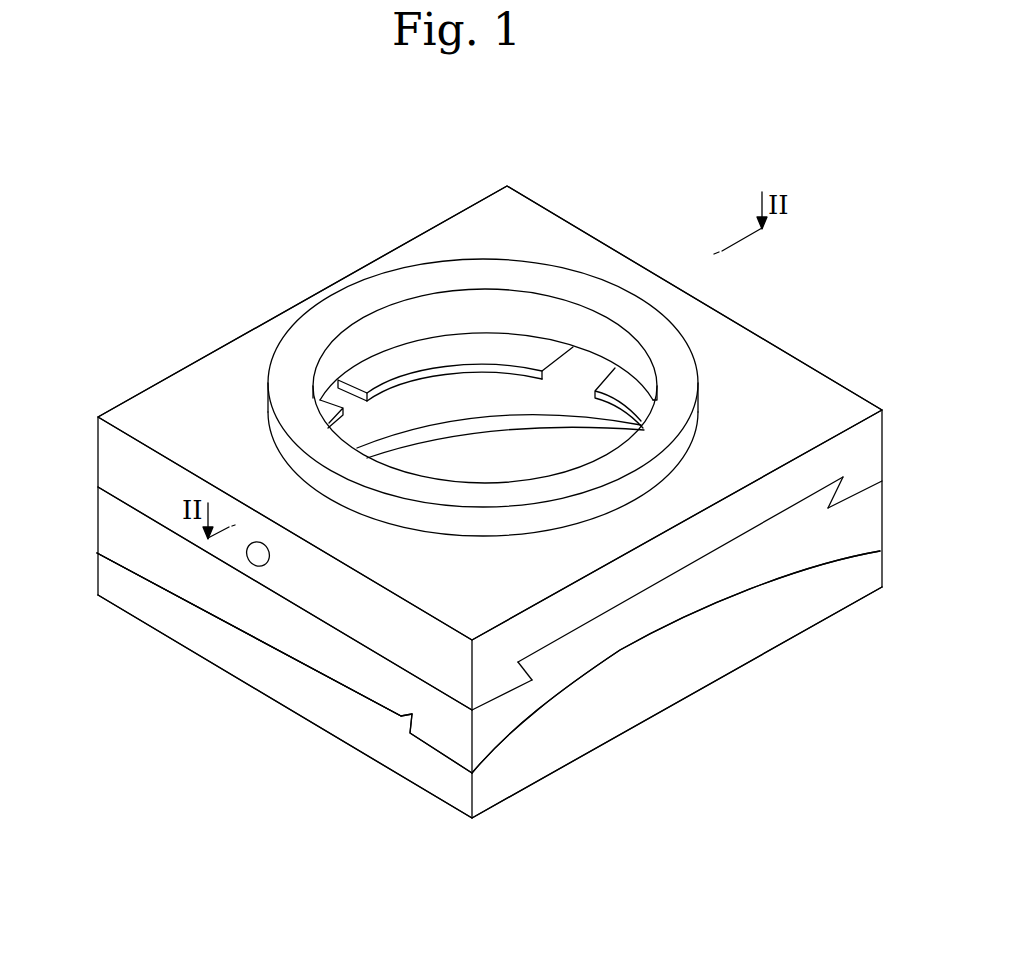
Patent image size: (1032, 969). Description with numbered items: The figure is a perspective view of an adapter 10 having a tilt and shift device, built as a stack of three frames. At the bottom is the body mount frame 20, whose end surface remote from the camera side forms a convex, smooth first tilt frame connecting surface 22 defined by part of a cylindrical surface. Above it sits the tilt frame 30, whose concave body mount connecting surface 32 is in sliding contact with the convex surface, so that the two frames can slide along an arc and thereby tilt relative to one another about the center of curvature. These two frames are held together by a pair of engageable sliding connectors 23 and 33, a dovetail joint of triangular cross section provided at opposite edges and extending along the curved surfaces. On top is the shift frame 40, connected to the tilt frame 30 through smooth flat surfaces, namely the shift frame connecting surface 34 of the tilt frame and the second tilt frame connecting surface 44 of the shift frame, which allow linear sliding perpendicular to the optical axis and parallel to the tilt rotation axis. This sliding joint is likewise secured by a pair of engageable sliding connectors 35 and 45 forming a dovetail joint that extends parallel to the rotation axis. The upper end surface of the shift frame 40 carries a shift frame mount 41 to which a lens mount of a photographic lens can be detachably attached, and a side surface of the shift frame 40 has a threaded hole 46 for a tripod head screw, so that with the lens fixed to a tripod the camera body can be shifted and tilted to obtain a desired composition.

The adapter 10 is at (355, 238).
The body mount frame 20 is at (650, 701).
The first tilt frame connecting surface 22 is at (287, 636).
The engageable sliding connector 23 is at (173, 582).
The tilt frame 30 is at (642, 612).
The body mount connecting surface 32 is at (257, 627).
The engageable sliding connector 33 is at (165, 590).
The shift frame connecting surface 34 is at (729, 537).
The engageable sliding connector 35 is at (828, 510).
The shift frame 40 is at (812, 382).
The shift frame mount 41 is at (590, 290).
The second tilt frame connecting surface 44 is at (710, 553).
The engageable sliding connector 45 is at (848, 492).
The threaded hole 46 is at (255, 563).